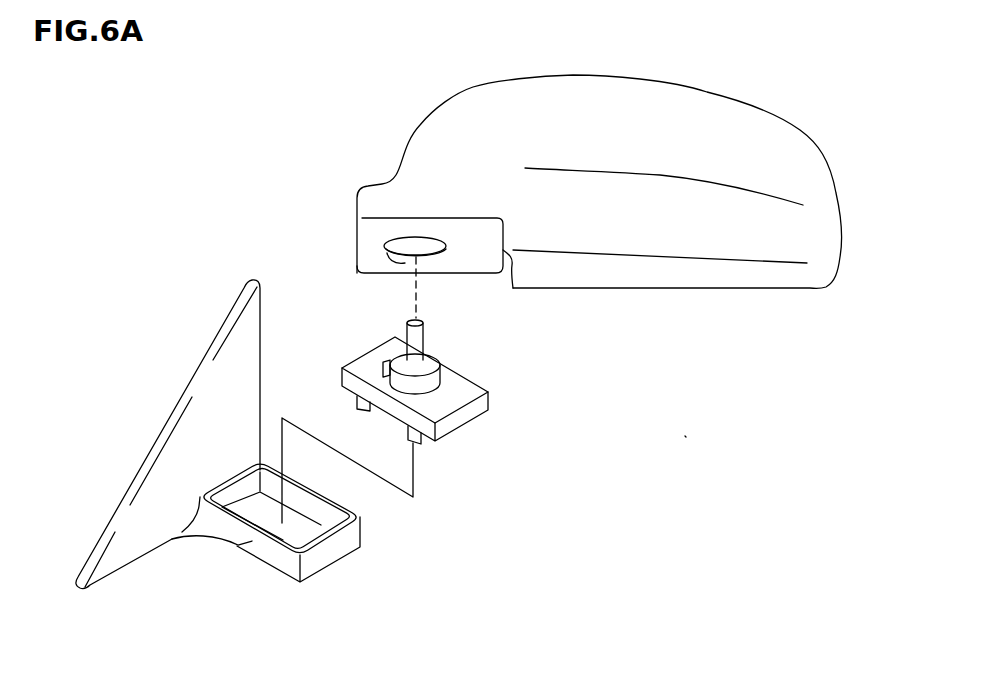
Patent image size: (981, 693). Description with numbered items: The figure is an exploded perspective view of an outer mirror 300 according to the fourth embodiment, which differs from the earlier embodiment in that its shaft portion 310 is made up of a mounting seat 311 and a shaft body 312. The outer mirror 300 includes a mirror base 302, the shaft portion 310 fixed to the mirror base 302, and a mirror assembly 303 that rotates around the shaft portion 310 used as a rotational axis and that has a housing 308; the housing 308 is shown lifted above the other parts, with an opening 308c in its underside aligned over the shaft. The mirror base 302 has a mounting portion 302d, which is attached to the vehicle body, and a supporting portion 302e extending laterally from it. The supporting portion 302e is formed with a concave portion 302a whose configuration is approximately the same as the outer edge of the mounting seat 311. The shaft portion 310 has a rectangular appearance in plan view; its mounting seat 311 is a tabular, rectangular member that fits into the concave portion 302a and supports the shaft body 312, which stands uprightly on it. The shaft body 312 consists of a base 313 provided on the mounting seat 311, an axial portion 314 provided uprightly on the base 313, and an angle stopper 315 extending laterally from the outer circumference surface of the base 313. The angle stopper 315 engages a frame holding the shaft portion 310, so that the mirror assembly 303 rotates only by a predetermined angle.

The outer mirror 300 is at (683, 433).
The mirror base 302 is at (363, 563).
The concave portion 302a is at (337, 519).
The mounting portion 302d is at (203, 395).
The supporting portion 302e is at (237, 545).
The mirror assembly 303 is at (624, 79).
The housing 308 is at (673, 289).
The shaft hole 308c is at (358, 268).
The shaft portion 310 is at (468, 462).
The mounting seat 311 is at (467, 420).
The shaft body 312 is at (560, 318).
The base 313 is at (440, 368).
The axial portion 314 is at (425, 333).
The angle stopper 315 is at (387, 360).